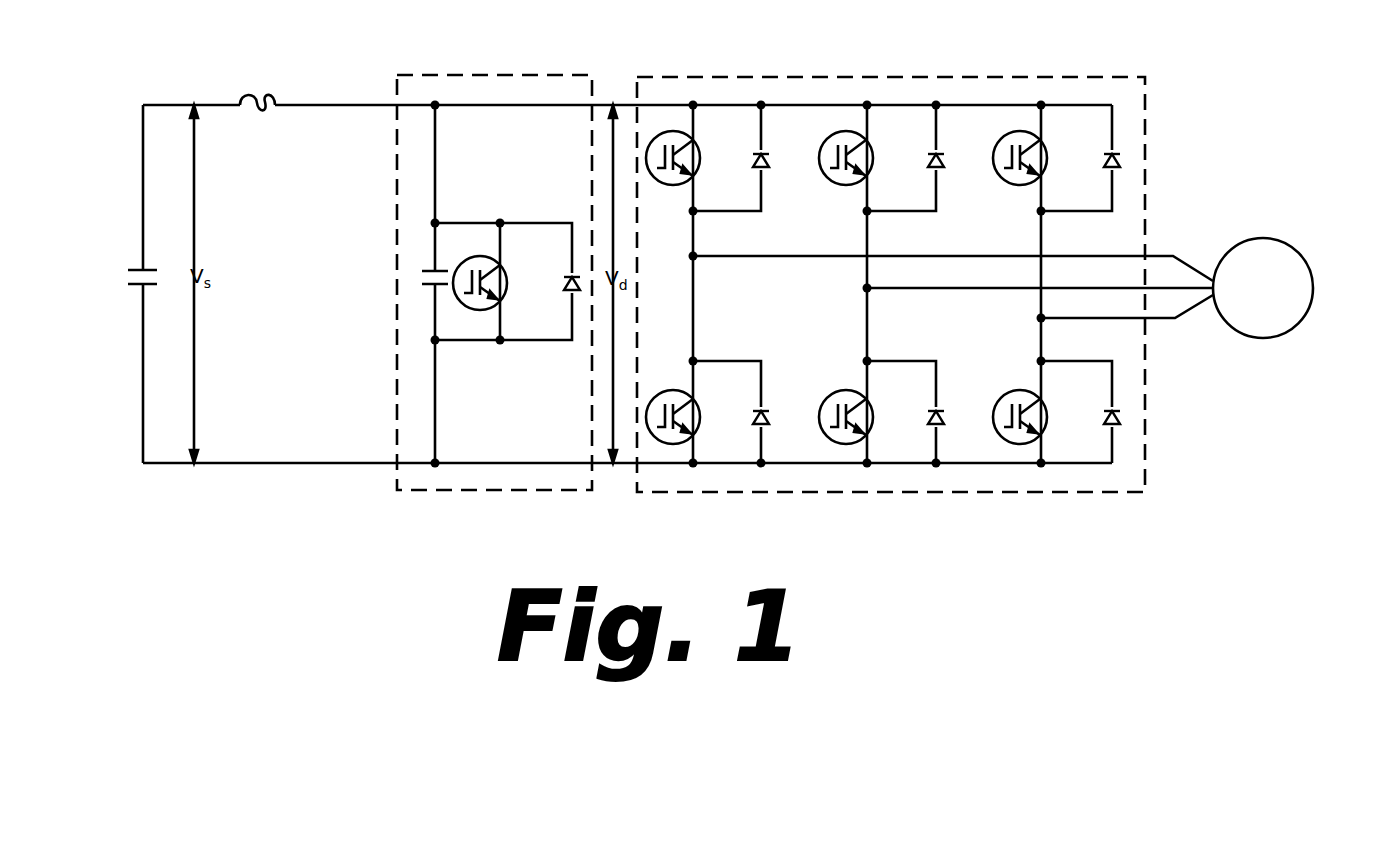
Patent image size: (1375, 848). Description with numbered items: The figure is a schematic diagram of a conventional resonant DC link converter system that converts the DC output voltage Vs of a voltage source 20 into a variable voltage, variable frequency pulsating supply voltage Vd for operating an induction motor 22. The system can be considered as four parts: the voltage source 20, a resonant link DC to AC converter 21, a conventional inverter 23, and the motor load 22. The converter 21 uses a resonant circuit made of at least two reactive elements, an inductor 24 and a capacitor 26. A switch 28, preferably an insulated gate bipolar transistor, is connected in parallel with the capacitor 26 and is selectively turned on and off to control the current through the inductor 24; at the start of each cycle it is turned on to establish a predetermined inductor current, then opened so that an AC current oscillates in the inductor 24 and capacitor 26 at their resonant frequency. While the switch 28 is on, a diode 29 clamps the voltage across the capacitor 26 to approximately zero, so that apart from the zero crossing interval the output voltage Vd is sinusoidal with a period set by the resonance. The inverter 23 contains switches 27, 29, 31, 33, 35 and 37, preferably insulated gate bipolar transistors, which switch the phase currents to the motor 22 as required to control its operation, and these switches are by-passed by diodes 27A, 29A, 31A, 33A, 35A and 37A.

The voltage source 20 is at (128, 278).
The resonant link DC to AC converter 21 is at (548, 75).
The induction motor 22 is at (1308, 266).
The inverter 23 is at (1150, 88).
The inductor 24 is at (262, 97).
The capacitor 26 is at (424, 284).
The switch 27 is at (670, 182).
The diode 27A is at (768, 150).
The switch 28 is at (464, 258).
The diode 29 is at (558, 298).
The diode 29A is at (942, 150).
The switch 31 is at (1000, 178).
The diode 31A is at (1120, 176).
The switch 33 is at (672, 393).
The diode 33A is at (756, 432).
The switch 35 is at (830, 398).
The diode 35A is at (932, 432).
The switch 37 is at (1010, 396).
The diode 37A is at (1108, 432).